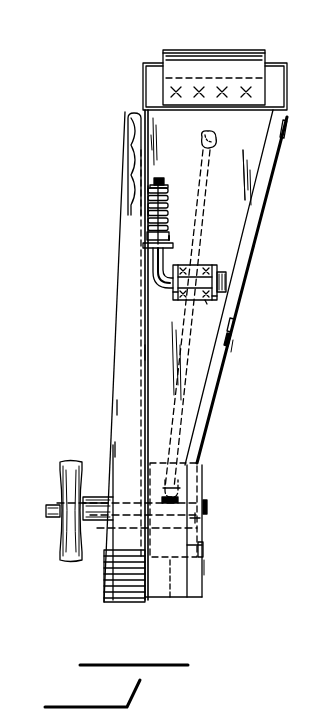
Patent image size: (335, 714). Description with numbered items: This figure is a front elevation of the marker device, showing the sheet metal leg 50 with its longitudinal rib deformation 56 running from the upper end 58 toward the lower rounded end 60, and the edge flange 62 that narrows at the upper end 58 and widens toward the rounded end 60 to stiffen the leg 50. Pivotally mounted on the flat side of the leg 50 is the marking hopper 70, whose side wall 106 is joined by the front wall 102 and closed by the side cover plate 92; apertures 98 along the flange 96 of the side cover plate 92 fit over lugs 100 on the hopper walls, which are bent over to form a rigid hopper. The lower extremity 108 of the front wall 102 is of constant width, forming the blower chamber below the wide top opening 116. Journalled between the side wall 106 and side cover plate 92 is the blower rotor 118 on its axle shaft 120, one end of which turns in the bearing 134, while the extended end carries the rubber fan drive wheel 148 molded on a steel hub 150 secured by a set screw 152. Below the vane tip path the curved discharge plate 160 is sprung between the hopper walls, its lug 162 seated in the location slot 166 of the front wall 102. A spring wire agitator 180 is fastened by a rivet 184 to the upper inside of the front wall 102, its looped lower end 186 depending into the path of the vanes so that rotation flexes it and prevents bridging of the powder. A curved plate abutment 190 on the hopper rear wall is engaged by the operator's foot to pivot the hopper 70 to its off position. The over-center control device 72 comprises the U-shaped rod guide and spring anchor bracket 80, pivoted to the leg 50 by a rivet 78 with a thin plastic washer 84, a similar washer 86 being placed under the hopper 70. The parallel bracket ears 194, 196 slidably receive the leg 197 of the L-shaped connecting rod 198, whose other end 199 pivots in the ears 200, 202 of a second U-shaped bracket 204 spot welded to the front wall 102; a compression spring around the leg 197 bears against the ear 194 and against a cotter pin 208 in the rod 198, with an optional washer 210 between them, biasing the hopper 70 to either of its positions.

The leg 50 is at (122, 449).
The rib deformation 56 is at (131, 148).
The upper end 58 is at (128, 118).
The lower rounded end 60 is at (100, 600).
The edge flange 62 is at (123, 407).
The marking hopper 70 is at (273, 217).
The over-center control device 72 is at (181, 211).
The rivet 78 is at (148, 213).
The rod guide and spring anchor bracket 80 is at (148, 190).
The plastic washer 84 is at (147, 233).
The plastic washer 86 is at (145, 353).
The side cover plate 92 is at (234, 326).
The flange 96 is at (227, 283).
The apertures 98 is at (234, 342).
The lugs 100 is at (232, 345).
The front wall 102 is at (248, 170).
The side wall 106 is at (143, 90).
The lower extremity 108 is at (198, 545).
The top opening 116 is at (276, 96).
The blower rotor 118 is at (208, 522).
The axle shaft 120 is at (52, 505).
The bearing 134 is at (208, 506).
The fan drive wheel 148 is at (66, 536).
The steel hub 150 is at (100, 522).
The set screw 152 is at (97, 493).
The discharge plate 160 is at (170, 597).
The lug 162 is at (167, 505).
The location slot 166 is at (186, 492).
The agitator 180 is at (182, 366).
The rivet 184 is at (216, 143).
The lower end 186 is at (198, 466).
The curved plate abutment 190 is at (222, 62).
The bracket ear 194 is at (169, 191).
The bracket ear 196 is at (173, 244).
The leg 197 is at (159, 178).
The connecting rod 198 is at (160, 271).
The other end 199 is at (208, 300).
The ear 200 is at (173, 292).
The ear 202 is at (220, 297).
The second U-shaped bracket 204 is at (220, 270).
The cotter pin 208 is at (143, 246).
The washer 210 is at (171, 232).